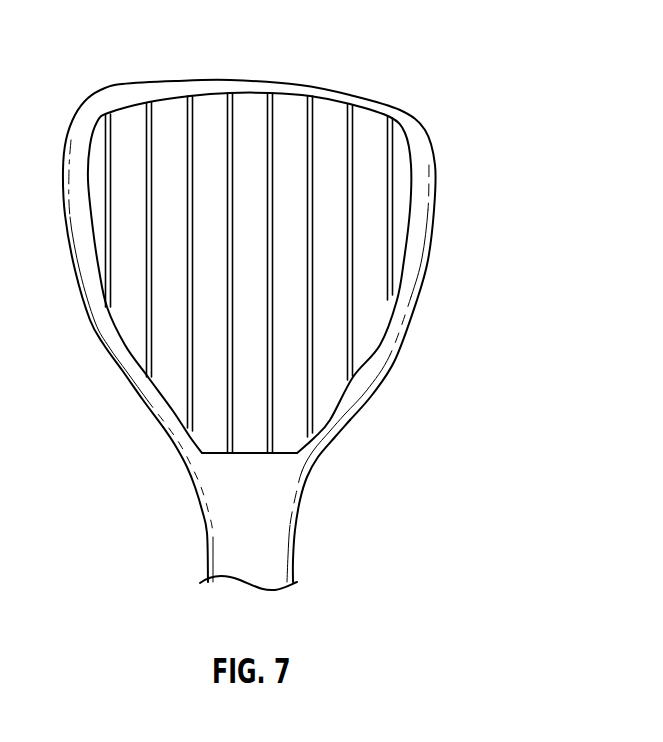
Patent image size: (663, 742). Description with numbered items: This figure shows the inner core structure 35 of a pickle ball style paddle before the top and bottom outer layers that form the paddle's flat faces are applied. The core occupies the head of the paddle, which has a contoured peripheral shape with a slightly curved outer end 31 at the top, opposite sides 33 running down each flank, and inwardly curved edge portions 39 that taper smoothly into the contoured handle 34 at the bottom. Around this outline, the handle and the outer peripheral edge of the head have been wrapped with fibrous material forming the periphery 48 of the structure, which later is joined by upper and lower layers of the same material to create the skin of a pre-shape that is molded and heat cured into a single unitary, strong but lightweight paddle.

The outer end 31 is at (256, 80).
The opposite sides 33 is at (427, 263).
The inner core structure 35 is at (333, 163).
The periphery 48 is at (407, 305).
The inwardly curved edge portions 39 is at (312, 480).
The handle 34 is at (272, 560).